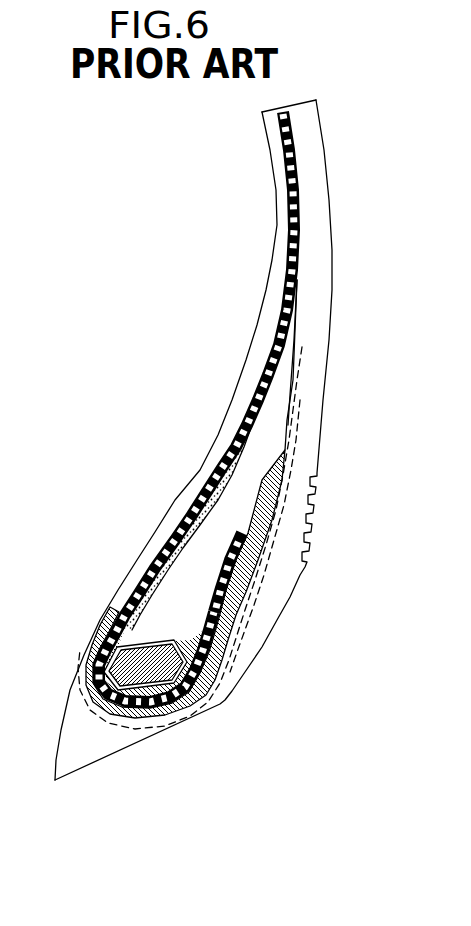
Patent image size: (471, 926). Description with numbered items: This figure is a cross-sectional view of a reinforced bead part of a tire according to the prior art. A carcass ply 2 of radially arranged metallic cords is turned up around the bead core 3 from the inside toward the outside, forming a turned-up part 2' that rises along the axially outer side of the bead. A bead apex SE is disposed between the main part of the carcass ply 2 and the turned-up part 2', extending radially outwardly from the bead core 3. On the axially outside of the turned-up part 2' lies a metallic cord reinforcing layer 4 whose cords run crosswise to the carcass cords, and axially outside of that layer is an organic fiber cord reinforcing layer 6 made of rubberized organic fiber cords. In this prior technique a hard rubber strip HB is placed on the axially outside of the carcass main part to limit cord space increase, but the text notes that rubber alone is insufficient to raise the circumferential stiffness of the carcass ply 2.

The carcass ply 2 is at (196, 407).
The turned-up part of the carcass ply 2' is at (296, 572).
The bead core 3 is at (142, 703).
The metallic cord reinforcing layer 4 is at (226, 668).
The organic fiber cord reinforcing layer 6 is at (291, 440).
The hard rubber strip HB is at (207, 493).
The bead apex SE is at (217, 533).